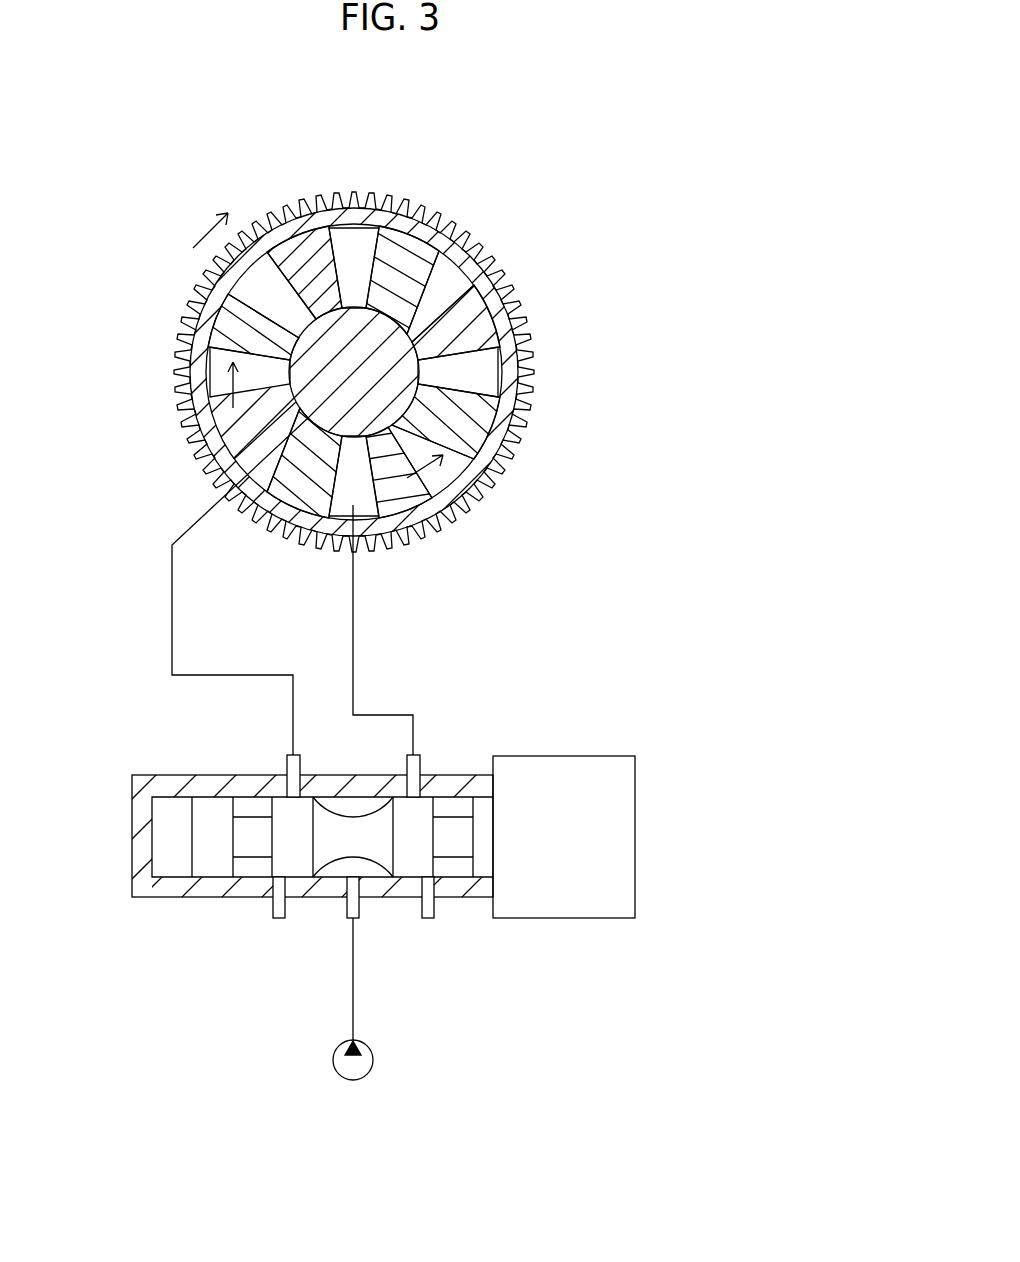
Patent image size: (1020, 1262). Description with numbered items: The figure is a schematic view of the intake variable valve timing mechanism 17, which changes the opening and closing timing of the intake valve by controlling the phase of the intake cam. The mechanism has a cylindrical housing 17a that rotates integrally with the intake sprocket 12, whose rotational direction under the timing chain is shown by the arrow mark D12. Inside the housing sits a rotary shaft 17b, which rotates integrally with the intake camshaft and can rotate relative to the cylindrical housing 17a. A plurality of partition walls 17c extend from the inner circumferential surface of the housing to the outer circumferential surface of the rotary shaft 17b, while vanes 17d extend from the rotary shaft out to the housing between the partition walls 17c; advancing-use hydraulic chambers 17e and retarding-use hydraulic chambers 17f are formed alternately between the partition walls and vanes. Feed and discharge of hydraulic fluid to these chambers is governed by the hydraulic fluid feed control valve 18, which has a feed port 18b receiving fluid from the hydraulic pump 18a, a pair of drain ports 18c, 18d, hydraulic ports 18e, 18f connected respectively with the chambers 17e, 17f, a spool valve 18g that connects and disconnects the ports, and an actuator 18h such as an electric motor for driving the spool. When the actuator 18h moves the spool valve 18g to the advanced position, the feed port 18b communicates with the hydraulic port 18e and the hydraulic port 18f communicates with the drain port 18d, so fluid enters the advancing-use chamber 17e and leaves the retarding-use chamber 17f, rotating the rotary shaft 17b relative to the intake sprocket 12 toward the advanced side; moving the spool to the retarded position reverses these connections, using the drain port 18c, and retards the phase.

The intake variable valve timing mechanism 17 is at (435, 370).
The intake sprocket 12 is at (480, 247).
The cylindrical housing 17a is at (513, 290).
The rotary shaft 17b is at (410, 361).
The partition walls 17c is at (290, 493).
The vanes 17d is at (225, 452).
The advancing-use hydraulic chamber 17e is at (242, 463).
The retarding-use hydraulic chamber 17f is at (363, 507).
The arrow mark indicating rotational direction of intake sprocket D12 is at (205, 230).
The hydraulic fluid feed control valve 18 is at (414, 891).
The hydraulic pump 18a is at (333, 1060).
The feed port 18b is at (343, 908).
The drain port 18c is at (272, 912).
The drain port 18d is at (430, 917).
The hydraulic port 18e is at (287, 764).
The hydraulic port 18f is at (421, 760).
The spool valve 18g is at (228, 863).
The actuator 18h is at (637, 797).